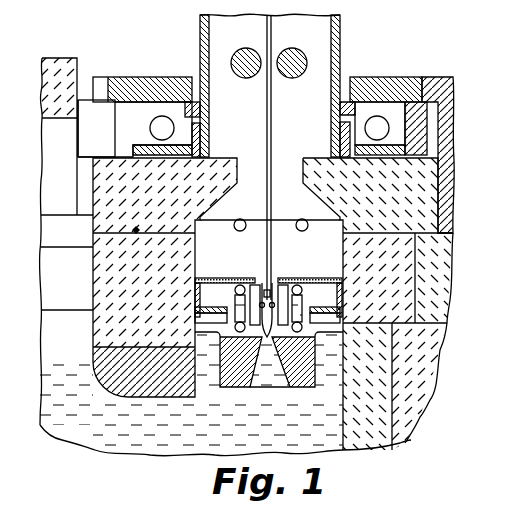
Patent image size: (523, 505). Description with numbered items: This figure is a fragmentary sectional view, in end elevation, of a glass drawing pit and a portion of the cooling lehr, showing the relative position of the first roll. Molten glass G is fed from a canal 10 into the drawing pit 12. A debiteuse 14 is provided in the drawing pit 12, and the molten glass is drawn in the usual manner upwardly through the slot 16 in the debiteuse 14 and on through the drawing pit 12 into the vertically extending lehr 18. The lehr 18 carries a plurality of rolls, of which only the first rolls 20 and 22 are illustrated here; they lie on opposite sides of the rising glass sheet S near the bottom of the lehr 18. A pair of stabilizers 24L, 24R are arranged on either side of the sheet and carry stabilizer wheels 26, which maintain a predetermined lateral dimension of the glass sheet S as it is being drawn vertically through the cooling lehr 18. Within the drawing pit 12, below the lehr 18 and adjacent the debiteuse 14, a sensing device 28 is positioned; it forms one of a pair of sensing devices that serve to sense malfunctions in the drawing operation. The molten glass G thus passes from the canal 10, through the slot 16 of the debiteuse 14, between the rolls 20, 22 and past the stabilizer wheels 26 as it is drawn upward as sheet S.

The canal 10 is at (55, 377).
The drawing pit 12 is at (303, 257).
The debiteuse 14 is at (300, 385).
The slot 16 is at (259, 353).
The lehr 18 is at (321, 32).
The first roll 20 is at (232, 59).
The first roll 22 is at (306, 63).
The stabilizer 24L is at (139, 117).
The stabilizer 24R is at (397, 155).
The stabilizer wheel 26 is at (274, 305).
The sensing device 28 is at (263, 284).
The shaft S is at (267, 108).
The molten glass G is at (230, 417).